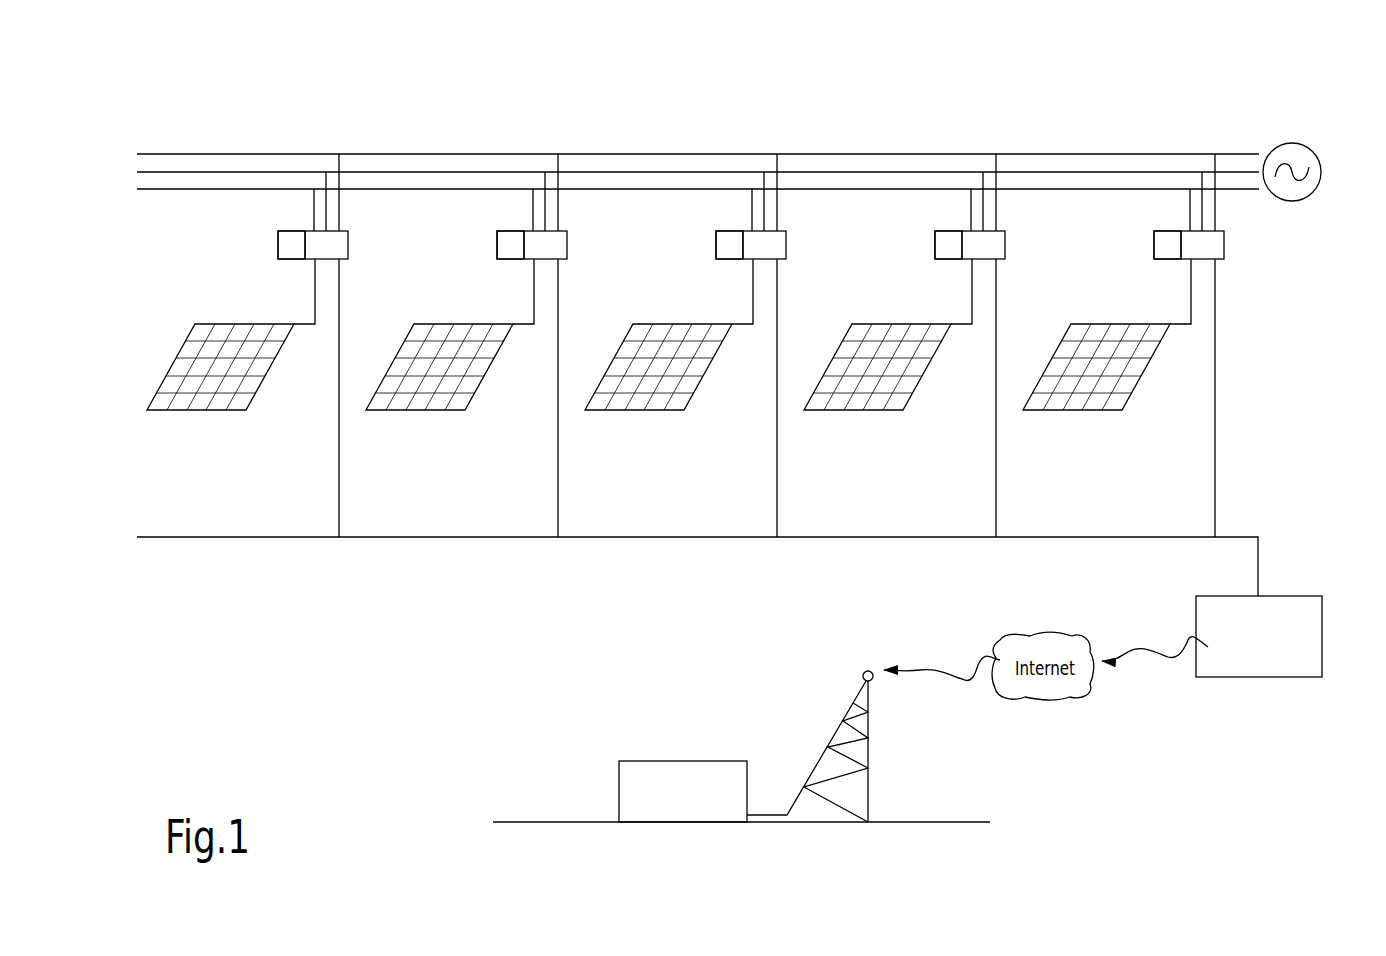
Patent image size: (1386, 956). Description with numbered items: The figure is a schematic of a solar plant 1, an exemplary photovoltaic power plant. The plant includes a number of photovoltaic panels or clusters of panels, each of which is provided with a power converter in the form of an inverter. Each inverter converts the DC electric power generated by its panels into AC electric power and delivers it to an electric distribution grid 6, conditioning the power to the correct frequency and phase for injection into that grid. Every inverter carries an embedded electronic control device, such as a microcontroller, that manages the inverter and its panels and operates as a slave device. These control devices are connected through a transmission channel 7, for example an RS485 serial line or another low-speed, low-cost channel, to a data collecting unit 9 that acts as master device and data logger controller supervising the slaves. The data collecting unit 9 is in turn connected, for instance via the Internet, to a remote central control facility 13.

The solar plant 1 is at (636, 86).
The electric distribution grid 6 is at (1066, 144).
The transmission channel 7 is at (687, 537).
The data collecting unit 9 is at (1290, 668).
The remote central control facility 13 is at (680, 768).